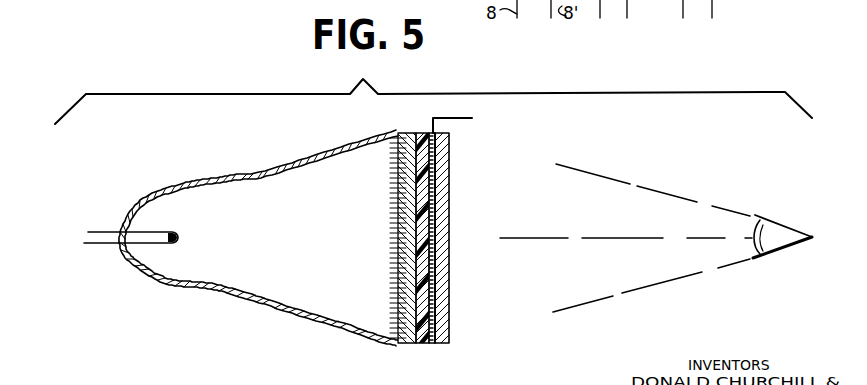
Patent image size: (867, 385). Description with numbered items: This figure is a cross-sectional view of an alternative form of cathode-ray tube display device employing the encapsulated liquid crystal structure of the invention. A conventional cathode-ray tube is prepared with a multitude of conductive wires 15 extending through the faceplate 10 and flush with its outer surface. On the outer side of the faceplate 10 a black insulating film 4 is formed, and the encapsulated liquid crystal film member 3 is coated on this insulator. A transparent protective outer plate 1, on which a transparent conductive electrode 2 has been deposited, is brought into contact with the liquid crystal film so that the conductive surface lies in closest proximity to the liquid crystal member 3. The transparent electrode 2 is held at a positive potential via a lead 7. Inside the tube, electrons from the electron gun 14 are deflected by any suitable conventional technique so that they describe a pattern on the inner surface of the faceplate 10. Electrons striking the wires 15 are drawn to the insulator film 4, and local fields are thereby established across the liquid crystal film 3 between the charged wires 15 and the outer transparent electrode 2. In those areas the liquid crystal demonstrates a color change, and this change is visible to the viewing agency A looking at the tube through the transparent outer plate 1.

The faceplate 10 is at (405, 135).
The lead 7 is at (437, 104).
The conductive wires 15 is at (397, 270).
The black insulating film 4 is at (421, 343).
The encapsulated liquid crystal film member 3 is at (429, 343).
The transparent protective outer plate 1 is at (449, 150).
The transparent conductive electrode 2 is at (436, 193).
The electron gun 14 is at (93, 230).
The viewing agency A is at (775, 223).